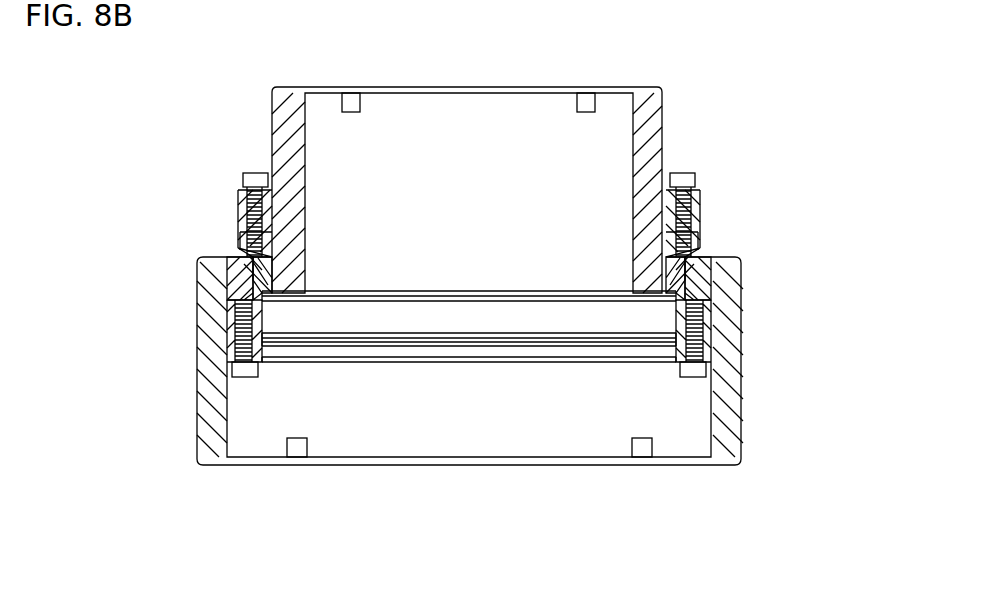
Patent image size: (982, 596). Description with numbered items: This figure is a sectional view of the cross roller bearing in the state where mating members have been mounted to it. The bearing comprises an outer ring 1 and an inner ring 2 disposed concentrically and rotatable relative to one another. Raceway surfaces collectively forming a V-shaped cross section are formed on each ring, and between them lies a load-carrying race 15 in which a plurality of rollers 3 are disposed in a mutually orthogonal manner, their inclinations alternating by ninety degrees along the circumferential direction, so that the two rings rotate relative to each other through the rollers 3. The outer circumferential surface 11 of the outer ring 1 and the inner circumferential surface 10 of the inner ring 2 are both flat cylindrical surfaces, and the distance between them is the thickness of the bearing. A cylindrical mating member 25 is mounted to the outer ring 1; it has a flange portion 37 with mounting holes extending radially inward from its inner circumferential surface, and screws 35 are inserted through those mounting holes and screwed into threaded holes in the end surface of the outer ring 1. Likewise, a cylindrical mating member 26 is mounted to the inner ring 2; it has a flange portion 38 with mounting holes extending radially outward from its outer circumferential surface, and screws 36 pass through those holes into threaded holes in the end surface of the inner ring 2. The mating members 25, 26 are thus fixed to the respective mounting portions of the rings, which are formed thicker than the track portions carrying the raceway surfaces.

The outer ring 1 is at (247, 287).
The inner ring 2 is at (243, 252).
The rollers 3 is at (250, 278).
The inner circumferential surface 10 is at (302, 262).
The outer circumferential surface 11 is at (247, 292).
The load-carrying race 15 is at (227, 268).
The mating member 25 is at (205, 430).
The mating member 26 is at (290, 118).
The screws 35 is at (245, 380).
The screws 36 is at (255, 172).
The flange portion 37 is at (227, 353).
The flange portion 38 is at (238, 205).